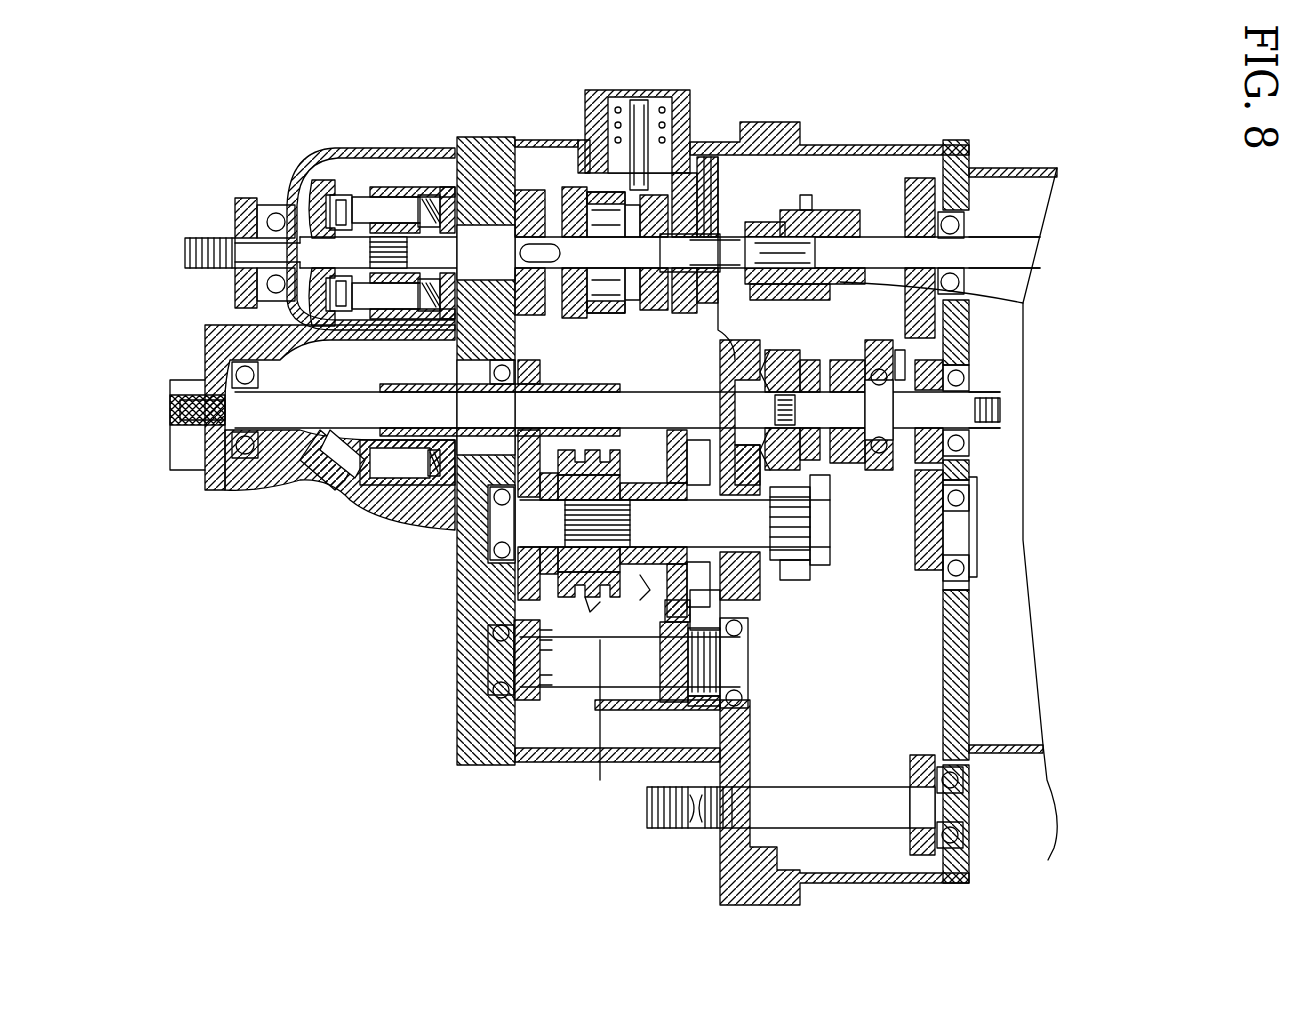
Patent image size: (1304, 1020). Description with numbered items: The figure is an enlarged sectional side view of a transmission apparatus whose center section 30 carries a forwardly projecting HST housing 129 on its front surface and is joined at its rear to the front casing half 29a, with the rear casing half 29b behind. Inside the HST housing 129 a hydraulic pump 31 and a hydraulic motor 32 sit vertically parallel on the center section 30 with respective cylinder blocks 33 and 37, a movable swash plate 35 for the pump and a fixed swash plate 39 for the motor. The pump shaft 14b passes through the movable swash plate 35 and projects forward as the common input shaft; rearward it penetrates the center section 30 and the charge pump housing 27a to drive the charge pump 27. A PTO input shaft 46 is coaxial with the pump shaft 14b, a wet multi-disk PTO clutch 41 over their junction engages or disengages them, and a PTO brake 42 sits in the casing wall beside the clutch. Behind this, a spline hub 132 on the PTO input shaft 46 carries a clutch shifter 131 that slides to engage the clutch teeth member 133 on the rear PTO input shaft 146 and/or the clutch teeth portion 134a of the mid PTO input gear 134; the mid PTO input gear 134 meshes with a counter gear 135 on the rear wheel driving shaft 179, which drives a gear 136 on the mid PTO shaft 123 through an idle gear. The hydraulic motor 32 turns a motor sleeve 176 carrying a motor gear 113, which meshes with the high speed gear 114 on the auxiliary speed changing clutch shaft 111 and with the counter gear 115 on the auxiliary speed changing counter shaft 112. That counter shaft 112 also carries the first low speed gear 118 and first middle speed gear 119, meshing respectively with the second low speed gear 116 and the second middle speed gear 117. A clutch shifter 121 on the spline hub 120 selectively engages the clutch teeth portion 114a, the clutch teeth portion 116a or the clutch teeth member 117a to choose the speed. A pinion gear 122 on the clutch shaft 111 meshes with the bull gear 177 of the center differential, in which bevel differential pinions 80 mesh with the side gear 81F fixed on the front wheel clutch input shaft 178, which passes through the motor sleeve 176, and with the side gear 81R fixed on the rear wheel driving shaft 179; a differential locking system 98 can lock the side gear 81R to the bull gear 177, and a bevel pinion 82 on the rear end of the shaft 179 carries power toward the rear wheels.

The pump shaft 14b is at (218, 242).
The movable swash plate 35 is at (330, 200).
The hydraulic pump 31 is at (380, 180).
The cylinder block 33 is at (412, 190).
The center section 30 is at (470, 145).
The charge pump 27 is at (518, 190).
The charge pump housing 27a is at (552, 192).
The PTO brake 42 is at (640, 130).
The PTO input shaft 46 is at (685, 240).
The front casing half 29a is at (752, 122).
The clutch teeth member 133 is at (803, 200).
The clutch shifter 131 is at (840, 205).
The spline hub 132 is at (772, 236).
The mid PTO input gear 134 is at (918, 180).
The rear casing half 29b is at (965, 150).
The rear PTO input shaft 146 is at (1030, 255).
The clutch teeth portion 134a is at (1023, 303).
The front wheel clutch input shaft 178 is at (255, 480).
The HST housing 129 is at (300, 500).
The fixed swash plate 39 is at (352, 480).
The hydraulic motor 32 is at (392, 500).
The cylinder block 37 is at (435, 505).
The motor sleeve 176 is at (510, 362).
The motor gear 113 is at (545, 388).
The high speed gear 114 is at (520, 580).
The clutch teeth portion 114a is at (545, 590).
The clutch teeth member 117a is at (632, 480).
The second low speed gear 116 is at (677, 430).
The clutch teeth portion 116a is at (655, 580).
The bevel differential side gear 81F is at (745, 370).
The bevel differential pinions 80 is at (815, 360).
The bevel differential side gear 81R is at (880, 353).
The bevel pinion 82 is at (1000, 389).
The rear wheel driving shaft 179 is at (940, 425).
The differential locking system 98 is at (960, 465).
The auxiliary speed changing clutch shaft 111 is at (977, 525).
The counter gear 135 is at (920, 495).
The PTO clutch 41 is at (650, 305).
The second middle speed gear 117 is at (725, 598).
The bull gear 177 is at (840, 540).
The pinion gear 122 is at (830, 575).
The clutch shifter 121 is at (572, 650).
The spline hub 120 is at (601, 726).
The first low speed gear 118 is at (670, 705).
The auxiliary speed changing counter shaft 112 is at (735, 662).
The first middle speed gear 119 is at (740, 714).
The counter gear 115 is at (500, 715).
The mid PTO shaft 123 is at (682, 822).
The gear 136 is at (925, 755).